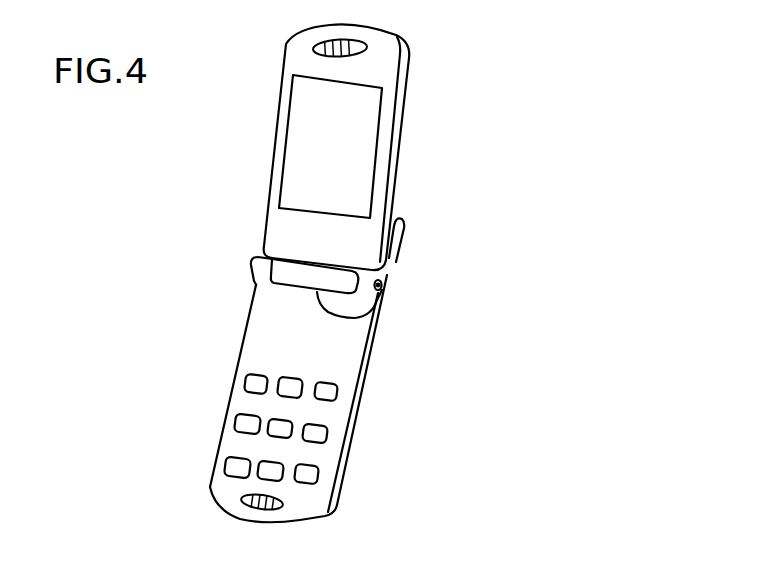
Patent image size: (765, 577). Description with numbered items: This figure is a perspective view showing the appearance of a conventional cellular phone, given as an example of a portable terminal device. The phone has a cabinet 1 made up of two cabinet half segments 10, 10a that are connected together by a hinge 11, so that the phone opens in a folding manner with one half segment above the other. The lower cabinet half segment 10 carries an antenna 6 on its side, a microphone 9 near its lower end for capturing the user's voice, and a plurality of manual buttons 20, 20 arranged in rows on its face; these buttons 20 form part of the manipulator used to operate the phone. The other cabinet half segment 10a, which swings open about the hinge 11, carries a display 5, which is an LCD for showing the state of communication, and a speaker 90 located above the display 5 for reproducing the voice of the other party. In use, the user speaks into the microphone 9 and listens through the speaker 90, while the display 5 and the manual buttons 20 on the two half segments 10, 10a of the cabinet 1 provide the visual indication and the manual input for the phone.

The cabinet 1 is at (411, 44).
The cabinet half segment 10a is at (385, 70).
The speaker 90 is at (313, 45).
The display 5 is at (353, 173).
The antenna 6 is at (403, 233).
The hinge 11 is at (365, 313).
The cabinet half segment 10 is at (342, 358).
The manual buttons 20 is at (338, 393).
The microphone 9 is at (286, 501).